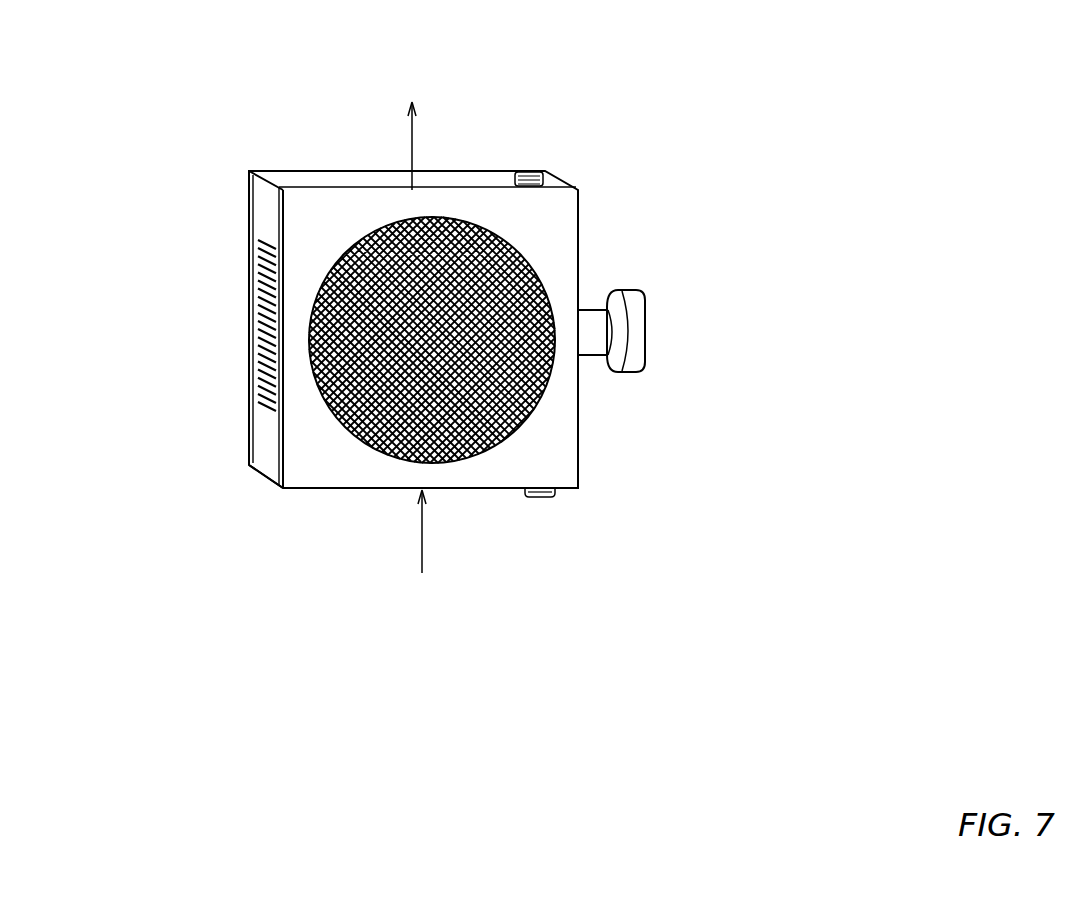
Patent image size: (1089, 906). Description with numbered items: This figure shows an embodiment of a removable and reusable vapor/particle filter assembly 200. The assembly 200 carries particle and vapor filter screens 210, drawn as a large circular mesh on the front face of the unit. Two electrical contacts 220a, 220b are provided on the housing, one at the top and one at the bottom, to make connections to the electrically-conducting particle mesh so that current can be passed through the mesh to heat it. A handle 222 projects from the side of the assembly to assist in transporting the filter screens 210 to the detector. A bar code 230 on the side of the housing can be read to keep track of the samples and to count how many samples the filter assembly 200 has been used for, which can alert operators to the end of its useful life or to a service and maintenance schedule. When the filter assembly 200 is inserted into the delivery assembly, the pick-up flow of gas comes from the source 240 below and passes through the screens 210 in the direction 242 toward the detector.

The removable and reusable vapor/particle filter assembly 200 is at (448, 693).
The particle and vapor filter screens 210 is at (485, 257).
The electrical contact 220a is at (533, 173).
The electrical contact 220b is at (545, 500).
The handle 222 is at (627, 289).
The bar code 230 is at (258, 303).
The source 240 is at (422, 568).
The direction of gas flow toward the detector 242 is at (413, 106).